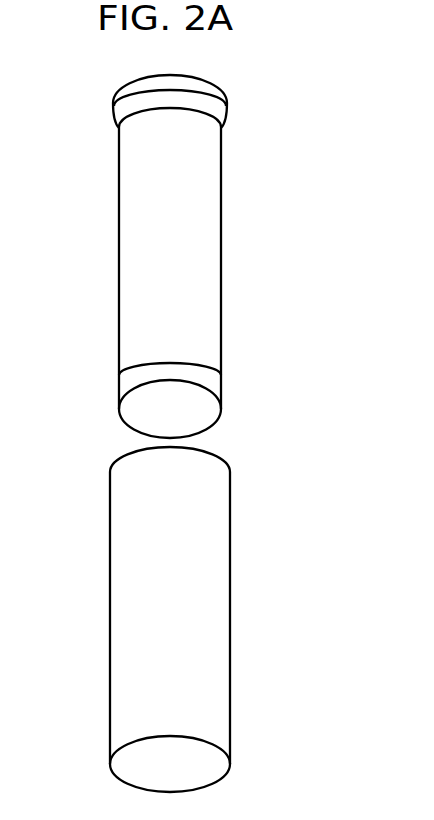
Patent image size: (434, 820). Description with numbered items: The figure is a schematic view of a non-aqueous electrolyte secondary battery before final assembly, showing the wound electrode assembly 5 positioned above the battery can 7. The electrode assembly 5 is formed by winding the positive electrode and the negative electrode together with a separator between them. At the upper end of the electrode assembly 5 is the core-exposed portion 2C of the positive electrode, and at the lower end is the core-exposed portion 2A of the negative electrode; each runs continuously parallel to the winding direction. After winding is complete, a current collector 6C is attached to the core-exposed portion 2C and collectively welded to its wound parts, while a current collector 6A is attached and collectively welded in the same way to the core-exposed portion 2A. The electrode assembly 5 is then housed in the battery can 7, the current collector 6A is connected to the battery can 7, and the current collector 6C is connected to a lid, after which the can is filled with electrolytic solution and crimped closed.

The electrode assembly 5 is at (145, 238).
The battery can 7 is at (125, 565).
The core-exposed portion 2A is at (132, 380).
The core-exposed portion 2C is at (133, 110).
The current collector 6A is at (202, 412).
The current collector 6C is at (217, 97).